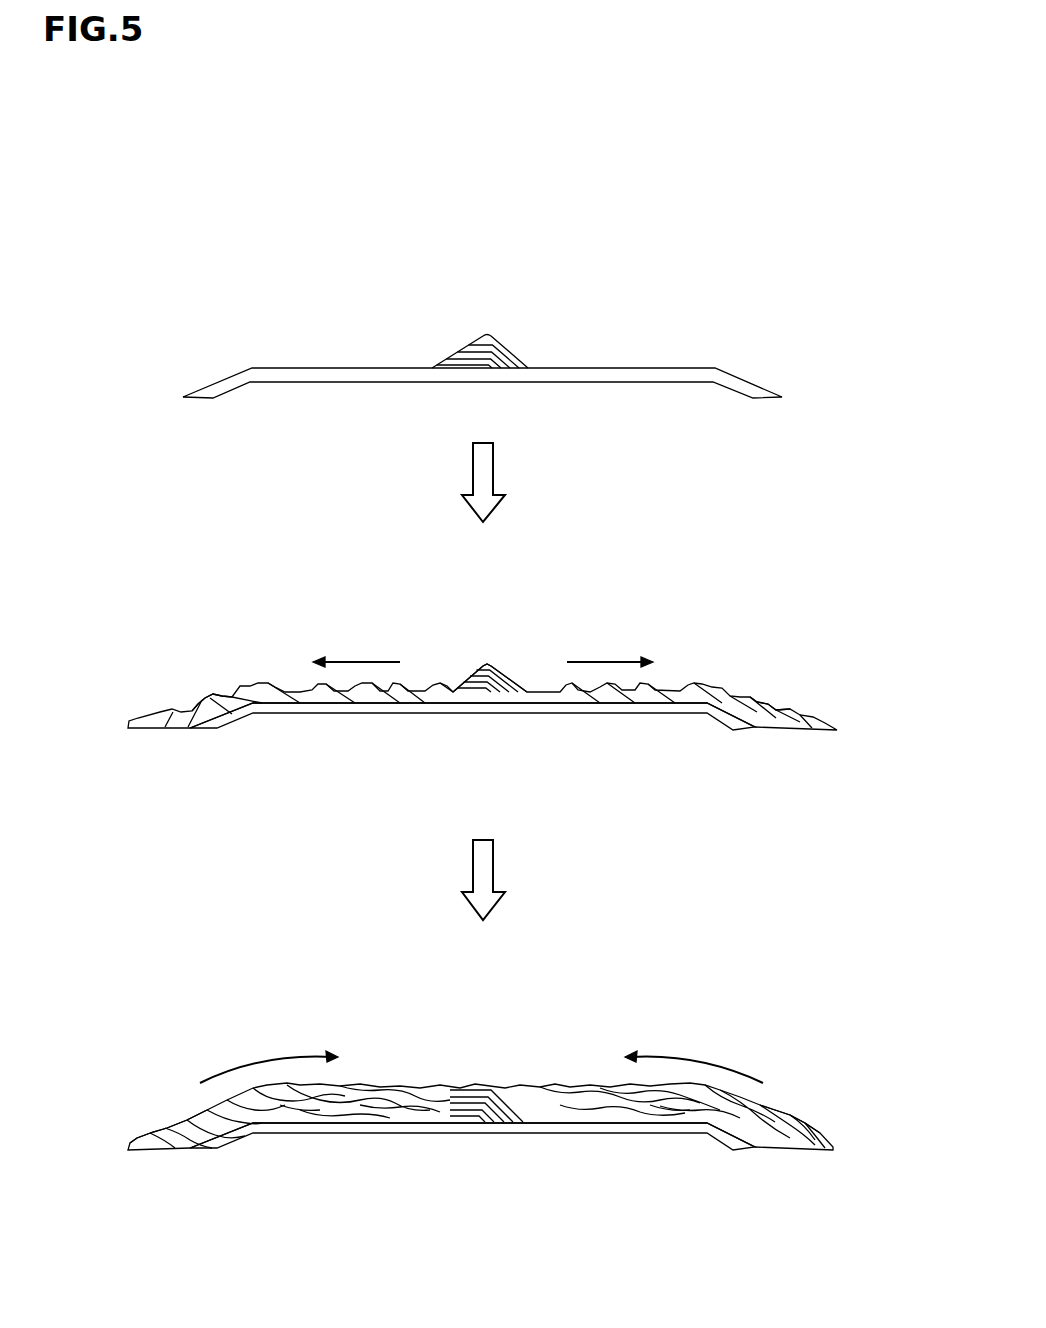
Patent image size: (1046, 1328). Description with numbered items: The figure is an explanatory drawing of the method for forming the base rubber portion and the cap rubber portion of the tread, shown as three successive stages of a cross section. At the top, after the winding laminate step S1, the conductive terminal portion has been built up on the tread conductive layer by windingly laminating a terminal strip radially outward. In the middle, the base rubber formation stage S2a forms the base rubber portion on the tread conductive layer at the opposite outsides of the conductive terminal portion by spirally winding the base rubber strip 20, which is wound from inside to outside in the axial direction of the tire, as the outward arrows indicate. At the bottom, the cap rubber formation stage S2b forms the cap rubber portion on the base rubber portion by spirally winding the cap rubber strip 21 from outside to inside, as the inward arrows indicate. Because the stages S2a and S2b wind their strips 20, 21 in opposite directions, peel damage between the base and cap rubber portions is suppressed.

The base rubber strip 20 is at (812, 713).
The cap rubber strip 21 is at (817, 1135).
The winding laminate step S1 is at (516, 342).
The base rubber formation stage S2a is at (698, 660).
The cap rubber formation stage S2b is at (600, 1075).